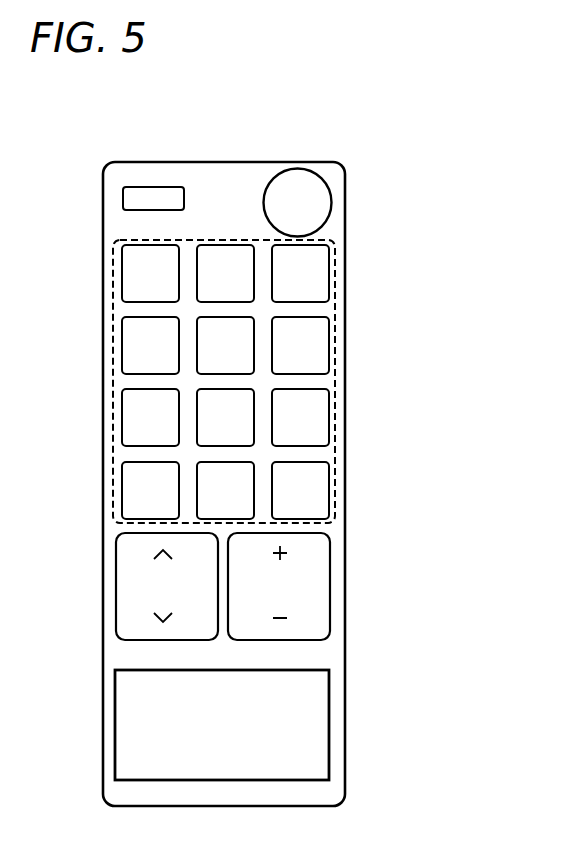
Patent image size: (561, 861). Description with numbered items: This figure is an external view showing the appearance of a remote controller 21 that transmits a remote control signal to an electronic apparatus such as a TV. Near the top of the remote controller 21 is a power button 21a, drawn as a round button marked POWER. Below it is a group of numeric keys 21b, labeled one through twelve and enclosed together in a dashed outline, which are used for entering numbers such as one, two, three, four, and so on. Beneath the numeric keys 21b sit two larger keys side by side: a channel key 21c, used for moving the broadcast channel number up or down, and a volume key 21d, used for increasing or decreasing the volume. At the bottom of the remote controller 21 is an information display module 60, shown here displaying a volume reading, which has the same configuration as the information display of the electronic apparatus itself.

The remote controller 21 is at (231, 162).
The power button 21a is at (332, 202).
The numeric keys 21b is at (336, 343).
The channel key 21c is at (116, 581).
The volume key 21d is at (331, 572).
The information display module 60 is at (307, 713).